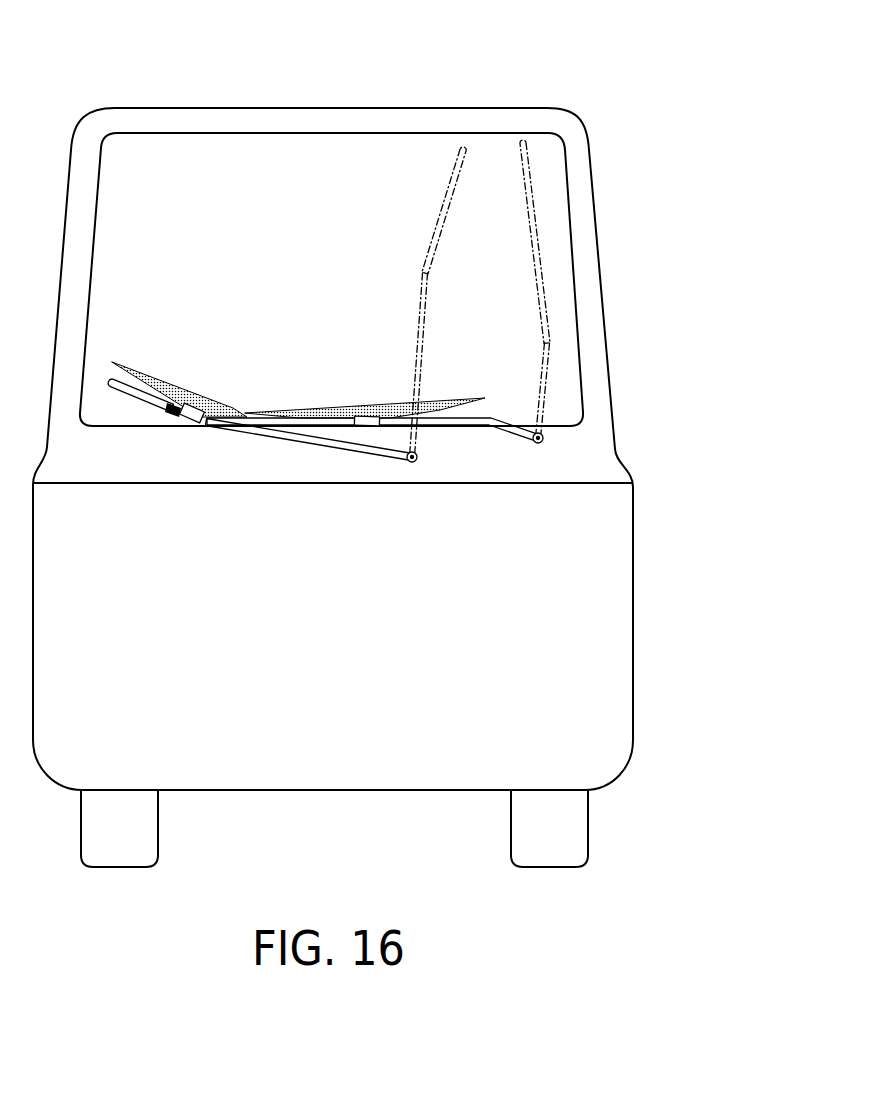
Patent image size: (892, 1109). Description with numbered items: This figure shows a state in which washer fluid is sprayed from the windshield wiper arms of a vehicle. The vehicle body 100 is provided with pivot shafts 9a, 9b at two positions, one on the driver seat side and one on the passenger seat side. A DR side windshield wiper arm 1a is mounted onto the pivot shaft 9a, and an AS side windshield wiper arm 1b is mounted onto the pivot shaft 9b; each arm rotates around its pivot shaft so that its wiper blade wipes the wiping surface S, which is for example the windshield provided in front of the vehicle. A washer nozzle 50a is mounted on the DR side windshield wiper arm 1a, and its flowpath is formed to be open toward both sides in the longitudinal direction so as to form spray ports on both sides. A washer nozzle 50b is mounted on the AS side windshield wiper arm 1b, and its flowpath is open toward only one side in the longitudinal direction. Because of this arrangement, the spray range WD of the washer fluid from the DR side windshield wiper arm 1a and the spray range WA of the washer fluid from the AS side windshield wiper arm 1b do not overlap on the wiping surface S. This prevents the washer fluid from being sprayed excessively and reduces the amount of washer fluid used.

The vehicle body 100 is at (541, 105).
The wiping surface S is at (340, 297).
The DR side windshield wiper arm 1a is at (493, 414).
The AS side windshield wiper arm 1b is at (139, 402).
The pivot shaft 9a is at (538, 444).
The pivot shaft 9b is at (413, 463).
The washer nozzle 50a is at (365, 427).
The washer nozzle 50b is at (194, 418).
The spray range WA is at (183, 403).
The spray range WD is at (349, 410).